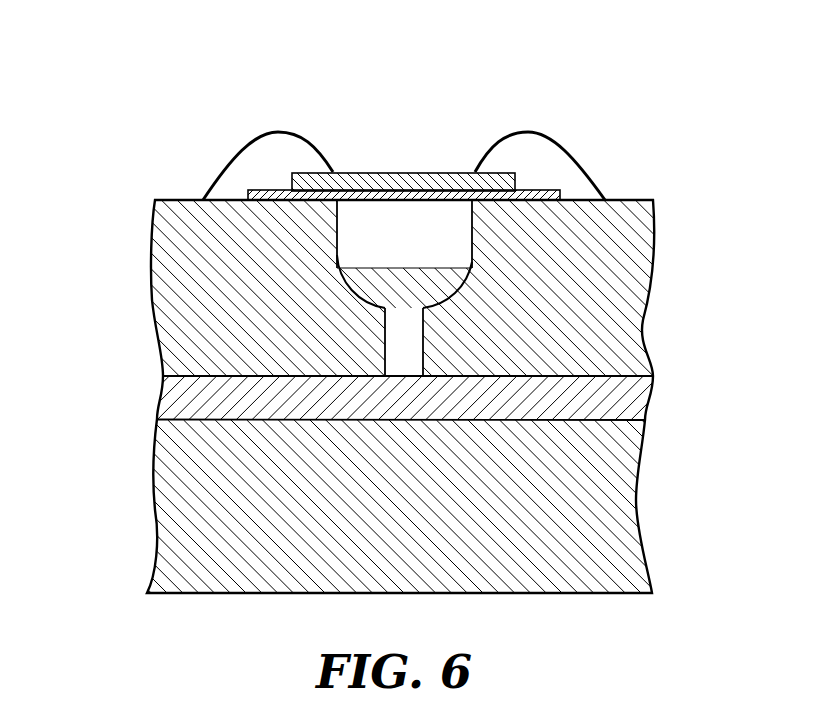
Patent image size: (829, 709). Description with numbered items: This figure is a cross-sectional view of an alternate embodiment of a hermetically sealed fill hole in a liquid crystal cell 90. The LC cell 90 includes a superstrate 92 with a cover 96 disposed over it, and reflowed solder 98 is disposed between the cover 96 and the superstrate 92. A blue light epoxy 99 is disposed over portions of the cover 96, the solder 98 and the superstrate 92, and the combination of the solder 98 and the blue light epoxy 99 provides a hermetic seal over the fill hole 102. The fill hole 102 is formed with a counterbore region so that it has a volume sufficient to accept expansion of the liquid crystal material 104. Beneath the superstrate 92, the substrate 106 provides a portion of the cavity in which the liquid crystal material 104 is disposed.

The LC cell 90 is at (180, 122).
The superstrate 92 is at (618, 308).
The cover 96 is at (398, 170).
The reflowed solder 98 is at (560, 196).
The blue light epoxy 99 is at (278, 130).
The fill hole 102 is at (333, 255).
The liquid crystal material 104 is at (635, 395).
The substrate 106 is at (610, 491).